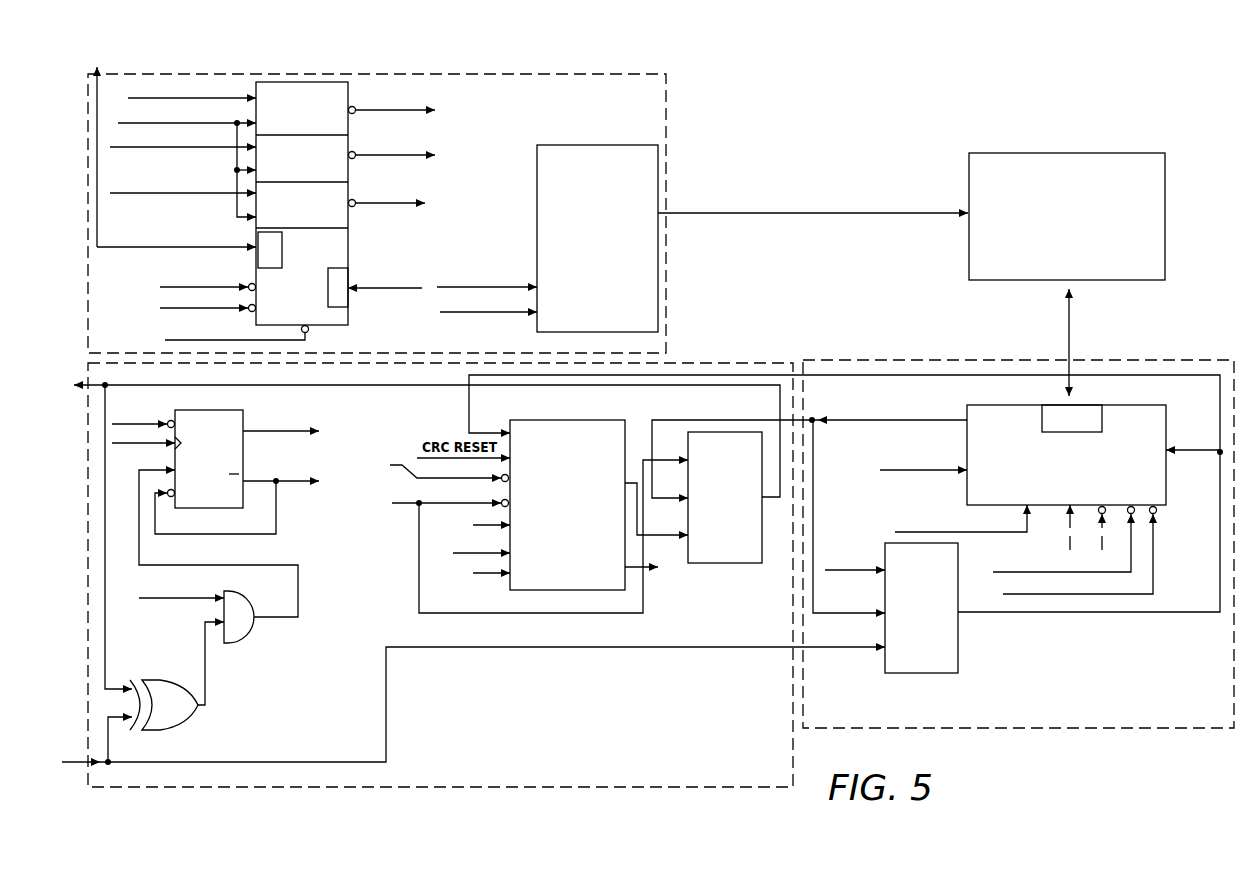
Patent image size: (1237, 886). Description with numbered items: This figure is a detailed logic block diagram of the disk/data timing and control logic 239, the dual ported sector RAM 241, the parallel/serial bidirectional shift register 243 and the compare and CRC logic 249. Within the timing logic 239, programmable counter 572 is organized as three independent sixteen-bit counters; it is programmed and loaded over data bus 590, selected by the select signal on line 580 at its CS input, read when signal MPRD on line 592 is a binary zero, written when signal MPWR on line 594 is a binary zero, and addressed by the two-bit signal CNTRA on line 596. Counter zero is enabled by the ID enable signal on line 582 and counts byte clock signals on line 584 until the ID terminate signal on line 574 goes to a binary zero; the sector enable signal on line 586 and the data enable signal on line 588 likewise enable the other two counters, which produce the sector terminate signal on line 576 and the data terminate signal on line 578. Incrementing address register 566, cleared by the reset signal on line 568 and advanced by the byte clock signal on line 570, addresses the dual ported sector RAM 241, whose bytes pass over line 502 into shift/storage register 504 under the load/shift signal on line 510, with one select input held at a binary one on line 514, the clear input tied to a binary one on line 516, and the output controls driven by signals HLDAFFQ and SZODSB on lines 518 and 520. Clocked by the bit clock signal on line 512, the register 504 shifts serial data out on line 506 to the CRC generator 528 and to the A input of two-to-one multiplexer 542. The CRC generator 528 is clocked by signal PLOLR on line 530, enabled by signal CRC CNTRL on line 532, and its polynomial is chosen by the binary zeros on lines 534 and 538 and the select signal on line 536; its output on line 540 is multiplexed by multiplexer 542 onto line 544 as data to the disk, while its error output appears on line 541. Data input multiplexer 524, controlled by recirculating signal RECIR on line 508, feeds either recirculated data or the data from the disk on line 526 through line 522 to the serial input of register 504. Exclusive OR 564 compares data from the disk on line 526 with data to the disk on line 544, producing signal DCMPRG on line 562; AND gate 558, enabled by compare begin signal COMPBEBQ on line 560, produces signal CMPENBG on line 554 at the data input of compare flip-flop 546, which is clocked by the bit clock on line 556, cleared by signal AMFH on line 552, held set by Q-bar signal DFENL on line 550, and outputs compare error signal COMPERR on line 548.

The disk/data timing and control logic 239 is at (667, 143).
The dual ported sector RAM 241 is at (1108, 154).
The parallel/serial bidirectional shift register 243 is at (1150, 360).
The compare and CRC logic 249 is at (765, 361).
The line 502 is at (1069, 340).
The shift/storage register 504 is at (1130, 405).
The line 506 is at (880, 420).
The line 508 is at (870, 572).
The line 510 is at (895, 532).
The line 512 is at (905, 470).
The line 514 is at (1068, 524).
The line 516 is at (1104, 528).
The line 518 is at (1131, 570).
The line 520 is at (1150, 595).
The line 522 is at (1100, 614).
The data input multiplexer 524 is at (940, 673).
The line 526 is at (825, 648).
The CRC generator 528 is at (560, 420).
The line 530 is at (390, 463).
The line 532 is at (392, 503).
The line 534 is at (465, 520).
The line 536 is at (453, 553).
The line 538 is at (470, 576).
The line 540 is at (670, 540).
The line 541 is at (640, 570).
The 2 to 1 multiplexer 542 is at (752, 563).
The line 544 is at (360, 385).
The compare flip-flop 546 is at (215, 410).
The line 548 is at (258, 432).
The line 550 is at (258, 481).
The line 552 is at (167, 422).
The line 554 is at (265, 617).
The line 556 is at (160, 443).
The AND gate 558 is at (236, 643).
The line 560 is at (147, 598).
The line 562 is at (205, 680).
The exclusive OR 564 is at (178, 718).
The incrementing address register 566 is at (587, 145).
The line 568 is at (500, 287).
The line 570 is at (500, 312).
The programmable counter 572 is at (346, 327).
The line 574 is at (422, 116).
The line 576 is at (422, 156).
The line 578 is at (418, 204).
The line 580 is at (165, 340).
The line 582 is at (128, 98).
The line 584 is at (218, 122).
The line 586 is at (165, 147).
The line 588 is at (165, 193).
The data bus 590 is at (215, 247).
The line 592 is at (160, 287).
The line 594 is at (160, 308).
The line 596 is at (378, 289).